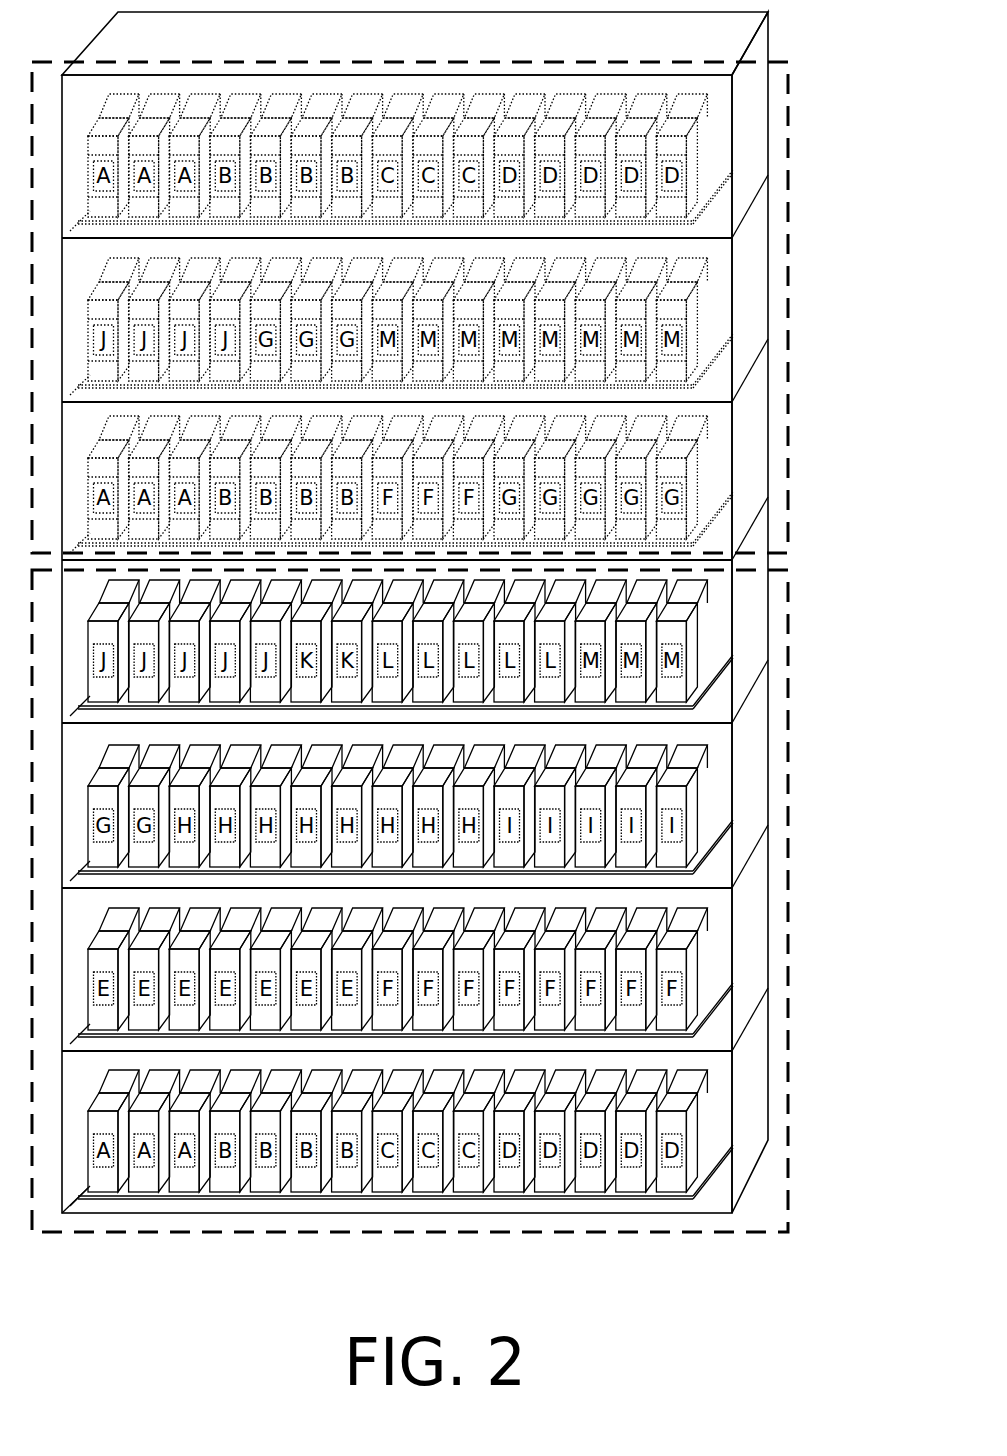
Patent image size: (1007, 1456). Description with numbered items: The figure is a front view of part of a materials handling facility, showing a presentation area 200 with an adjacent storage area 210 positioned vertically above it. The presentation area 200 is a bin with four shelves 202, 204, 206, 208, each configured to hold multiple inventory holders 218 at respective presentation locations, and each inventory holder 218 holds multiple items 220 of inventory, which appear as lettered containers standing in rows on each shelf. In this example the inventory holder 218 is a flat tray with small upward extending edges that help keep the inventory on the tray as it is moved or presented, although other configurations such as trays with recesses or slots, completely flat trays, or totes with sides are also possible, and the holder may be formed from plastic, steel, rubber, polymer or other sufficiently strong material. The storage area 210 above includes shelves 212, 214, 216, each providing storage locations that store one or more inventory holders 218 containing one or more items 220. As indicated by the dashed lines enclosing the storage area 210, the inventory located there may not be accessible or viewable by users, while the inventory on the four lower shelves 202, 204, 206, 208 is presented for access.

The presentation area 200 is at (453, 657).
The shelf 202 is at (479, 1128).
The shelf 204 is at (466, 975).
The shelf 206 is at (466, 813).
The shelf 208 is at (466, 648).
The storage area 210 is at (453, 292).
The shelf 212 is at (466, 488).
The shelf 214 is at (466, 325).
The shelf 216 is at (468, 157).
The inventory holder 218 is at (465, 711).
The item 220 is at (500, 774).